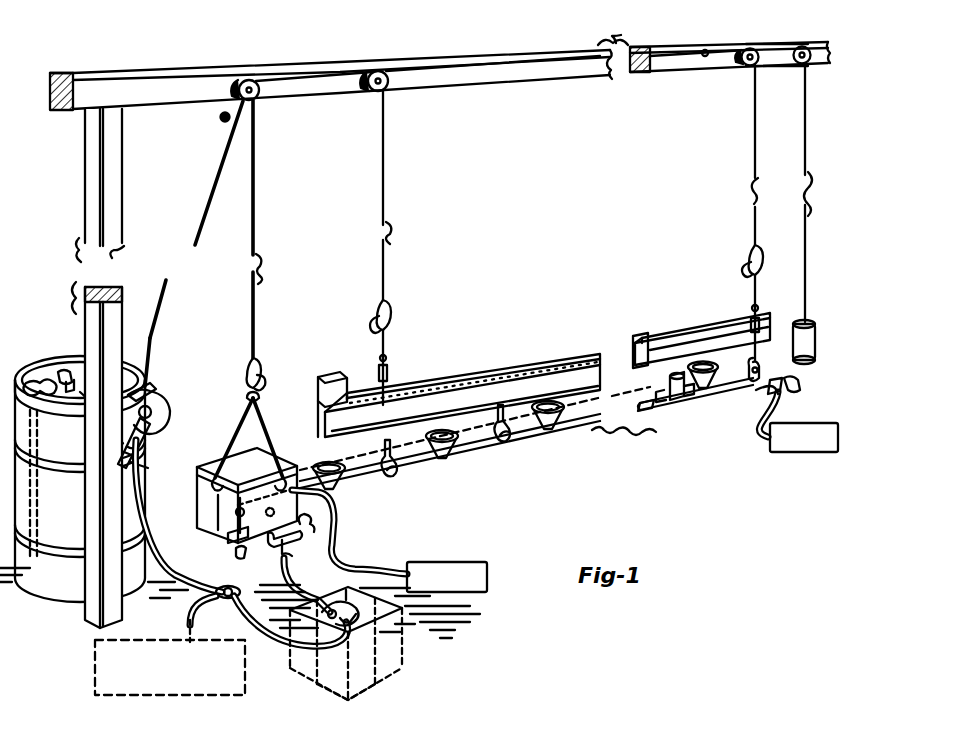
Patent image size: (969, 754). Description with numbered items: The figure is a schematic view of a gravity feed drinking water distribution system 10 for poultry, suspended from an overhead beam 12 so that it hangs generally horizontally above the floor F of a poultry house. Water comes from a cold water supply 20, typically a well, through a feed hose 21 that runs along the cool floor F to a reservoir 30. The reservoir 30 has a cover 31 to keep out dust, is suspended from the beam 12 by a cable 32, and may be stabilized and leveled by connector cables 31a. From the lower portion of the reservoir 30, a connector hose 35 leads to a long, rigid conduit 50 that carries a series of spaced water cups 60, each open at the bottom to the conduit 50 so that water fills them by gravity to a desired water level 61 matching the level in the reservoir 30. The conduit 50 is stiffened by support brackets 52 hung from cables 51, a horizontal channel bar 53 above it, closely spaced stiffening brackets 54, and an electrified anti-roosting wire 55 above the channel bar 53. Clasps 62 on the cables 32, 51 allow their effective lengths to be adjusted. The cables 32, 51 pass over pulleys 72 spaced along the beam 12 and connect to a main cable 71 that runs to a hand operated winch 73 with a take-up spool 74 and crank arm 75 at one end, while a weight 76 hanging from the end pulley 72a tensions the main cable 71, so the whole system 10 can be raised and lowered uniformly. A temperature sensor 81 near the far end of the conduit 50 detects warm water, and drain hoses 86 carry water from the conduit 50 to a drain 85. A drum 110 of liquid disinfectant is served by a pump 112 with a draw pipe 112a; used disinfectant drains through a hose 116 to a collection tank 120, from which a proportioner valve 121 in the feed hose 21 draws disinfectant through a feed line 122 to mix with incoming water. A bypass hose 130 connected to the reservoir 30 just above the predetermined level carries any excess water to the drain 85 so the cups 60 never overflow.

The water distribution system 10 is at (650, 454).
The beam 12 is at (440, 70).
The cold water supply 20 is at (160, 695).
The feed hose 21 is at (202, 624).
The reservoir 30 is at (270, 427).
The cover 31 is at (230, 451).
The connector cables 31a is at (247, 470).
The cable 32 is at (274, 229).
The connector hose 35 is at (277, 561).
The conduit 50 is at (454, 462).
The cable 51 is at (748, 209).
The support brackets 52 is at (408, 468).
The channel bar 53 is at (517, 369).
The stiffening brackets 54 is at (588, 399).
The anti-roosting wire 55 is at (516, 351).
The water cups 60 is at (431, 398).
The desired water level 61 is at (594, 379).
The clasps 62 is at (247, 372).
The main cable 71 is at (522, 62).
The pulleys 72 is at (261, 68).
The end pulley 72a is at (776, 46).
The winch 73 is at (163, 390).
The take-up spool 74 is at (164, 404).
The crank arm 75 is at (161, 432).
The weight 76 is at (820, 330).
The temperature sensor 81 is at (674, 408).
The drain 85 is at (486, 577).
The drain hoses 86 is at (412, 578).
The drum 110 is at (70, 604).
The pump 112 is at (66, 382).
The draw pipe 112a is at (65, 485).
The hose 116 is at (298, 593).
The collection tank 120 is at (358, 669).
The proportioner valve 121 is at (210, 595).
The feed line 122 is at (267, 630).
The bypass hose 130 is at (342, 554).
The floor F is at (455, 613).